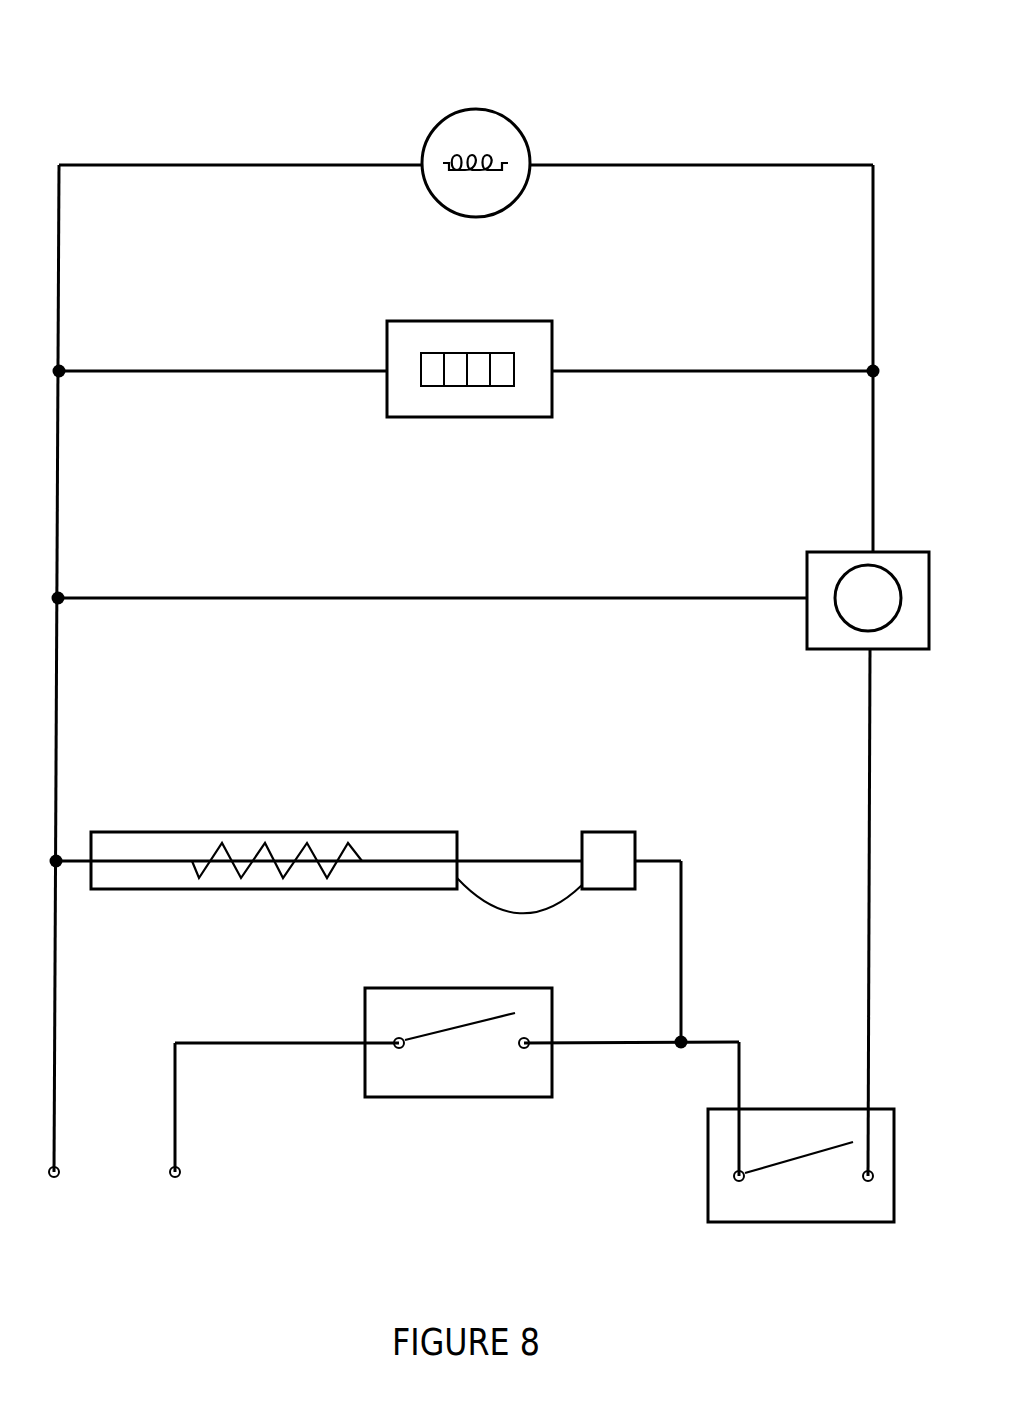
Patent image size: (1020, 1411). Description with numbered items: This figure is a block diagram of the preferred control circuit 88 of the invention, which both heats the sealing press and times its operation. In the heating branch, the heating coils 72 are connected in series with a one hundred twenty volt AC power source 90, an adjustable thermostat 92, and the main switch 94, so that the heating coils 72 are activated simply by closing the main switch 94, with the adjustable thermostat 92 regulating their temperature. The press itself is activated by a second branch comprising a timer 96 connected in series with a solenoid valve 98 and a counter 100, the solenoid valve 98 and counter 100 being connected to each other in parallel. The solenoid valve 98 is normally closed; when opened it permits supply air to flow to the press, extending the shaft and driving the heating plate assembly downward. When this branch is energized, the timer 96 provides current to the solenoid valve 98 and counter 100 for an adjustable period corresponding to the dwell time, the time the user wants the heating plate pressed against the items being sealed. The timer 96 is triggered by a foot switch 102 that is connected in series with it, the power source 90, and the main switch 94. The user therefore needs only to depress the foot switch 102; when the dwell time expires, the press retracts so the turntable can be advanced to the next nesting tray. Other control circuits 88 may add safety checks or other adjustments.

The control circuit 88 is at (268, 95).
The solenoid valve 98 is at (487, 155).
The counter 100 is at (469, 352).
The timer 96 is at (868, 584).
The heating coils 72 is at (336, 855).
The adjustable thermostat 92 is at (608, 843).
The main switch 94 is at (458, 1065).
The power source 90 is at (114, 1177).
The foot switch 102 is at (801, 1152).